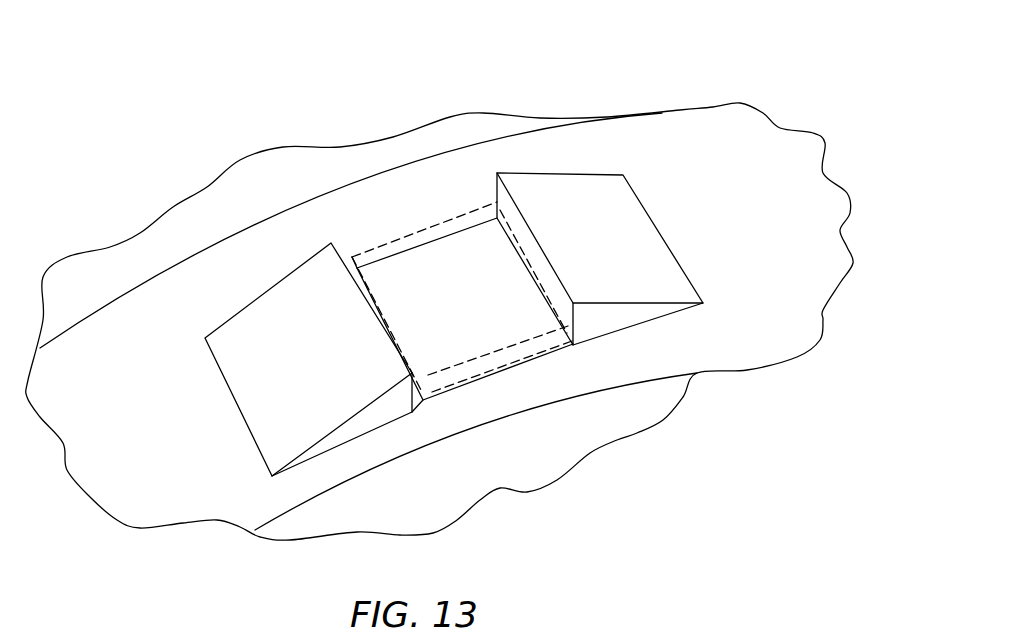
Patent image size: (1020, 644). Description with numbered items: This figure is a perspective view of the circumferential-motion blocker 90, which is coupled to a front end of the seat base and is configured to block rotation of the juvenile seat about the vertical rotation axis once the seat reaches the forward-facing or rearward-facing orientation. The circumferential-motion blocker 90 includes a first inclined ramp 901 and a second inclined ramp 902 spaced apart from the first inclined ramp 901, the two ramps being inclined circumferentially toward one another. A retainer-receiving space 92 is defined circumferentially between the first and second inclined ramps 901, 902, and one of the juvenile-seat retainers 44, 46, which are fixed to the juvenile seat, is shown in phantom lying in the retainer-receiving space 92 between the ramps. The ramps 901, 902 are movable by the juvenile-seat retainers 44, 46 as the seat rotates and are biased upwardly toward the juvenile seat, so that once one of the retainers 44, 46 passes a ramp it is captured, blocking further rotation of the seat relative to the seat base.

The circumferential-motion blocker 90 is at (218, 412).
The first inclined ramp 901 is at (267, 330).
The second inclined ramp 902 is at (573, 200).
The retainer-receiving space 92 is at (413, 217).
The first juvenile-seat retainer 44 is at (447, 220).
The second juvenile-seat retainer 46 is at (447, 220).